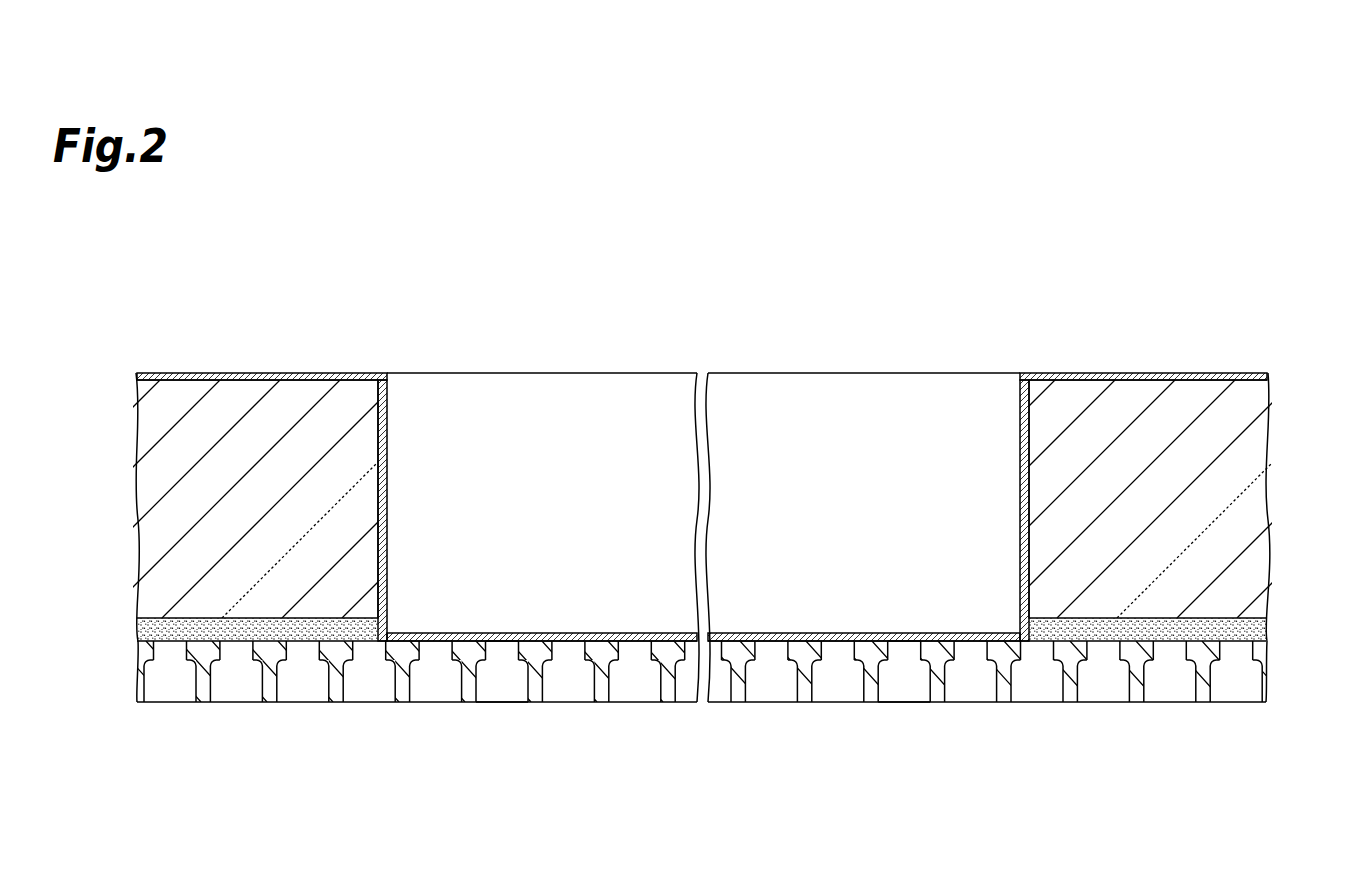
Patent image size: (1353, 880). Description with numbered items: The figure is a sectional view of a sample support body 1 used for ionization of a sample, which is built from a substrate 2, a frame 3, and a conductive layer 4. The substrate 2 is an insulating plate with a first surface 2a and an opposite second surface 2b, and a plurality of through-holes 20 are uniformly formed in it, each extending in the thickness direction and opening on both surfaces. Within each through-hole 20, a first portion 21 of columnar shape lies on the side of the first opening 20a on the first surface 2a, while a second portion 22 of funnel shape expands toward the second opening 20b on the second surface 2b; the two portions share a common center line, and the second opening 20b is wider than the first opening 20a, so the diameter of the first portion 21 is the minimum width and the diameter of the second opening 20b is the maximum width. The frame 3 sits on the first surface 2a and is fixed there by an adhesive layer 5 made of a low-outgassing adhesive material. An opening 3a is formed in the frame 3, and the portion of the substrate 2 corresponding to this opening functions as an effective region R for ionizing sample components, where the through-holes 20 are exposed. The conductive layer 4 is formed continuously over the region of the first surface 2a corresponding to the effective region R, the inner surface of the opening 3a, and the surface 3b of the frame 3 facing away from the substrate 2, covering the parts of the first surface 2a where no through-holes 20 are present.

The sample support body 1 is at (1050, 278).
The substrate 2 is at (1268, 672).
The first surface 2a is at (1268, 622).
The second surface 2b is at (1267, 703).
The frame 3 is at (1268, 493).
The opening 3a is at (387, 443).
The surface 3b is at (1243, 373).
The conductive layer 4 is at (665, 633).
The adhesive layer 5 is at (135, 632).
The through-hole 20 is at (220, 688).
The first opening 20a is at (508, 633).
The second opening 20b is at (517, 703).
The first portion 21 is at (497, 633).
The second portion 22 is at (485, 693).
The effective region R is at (770, 631).